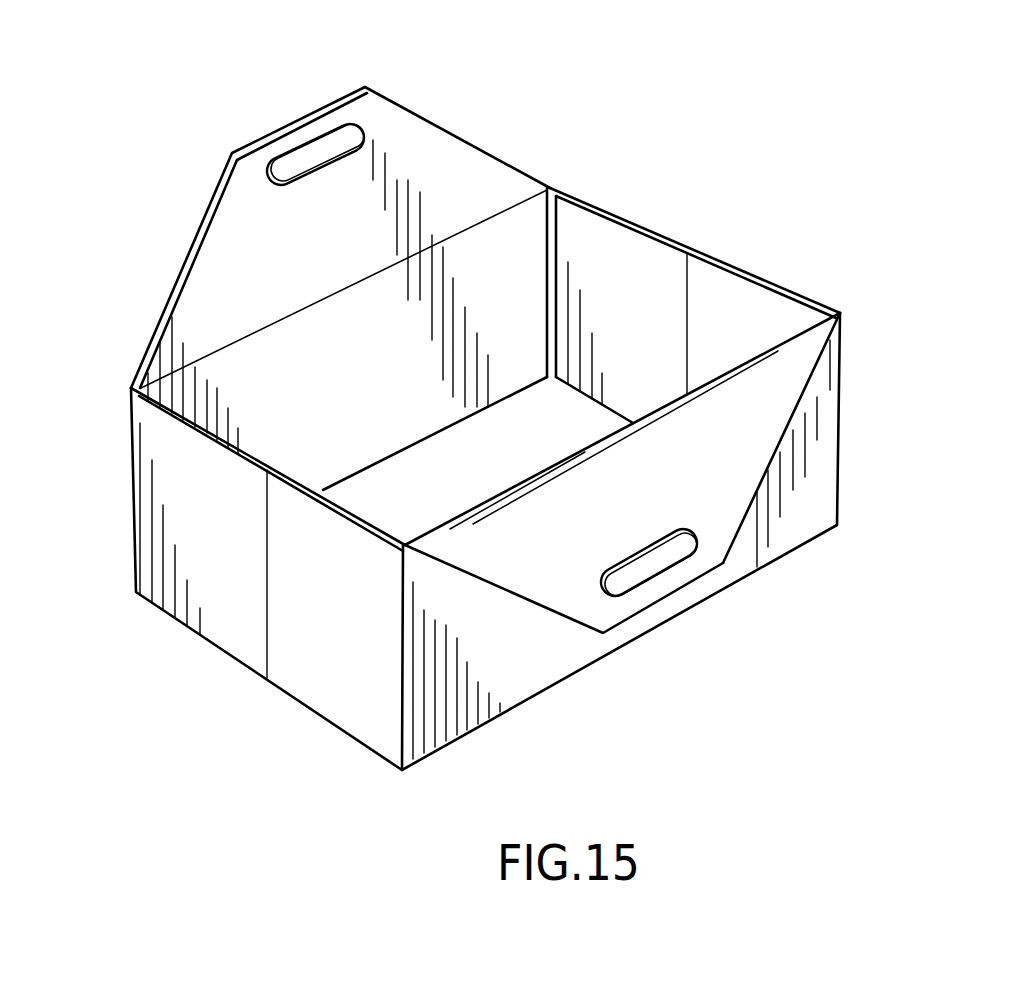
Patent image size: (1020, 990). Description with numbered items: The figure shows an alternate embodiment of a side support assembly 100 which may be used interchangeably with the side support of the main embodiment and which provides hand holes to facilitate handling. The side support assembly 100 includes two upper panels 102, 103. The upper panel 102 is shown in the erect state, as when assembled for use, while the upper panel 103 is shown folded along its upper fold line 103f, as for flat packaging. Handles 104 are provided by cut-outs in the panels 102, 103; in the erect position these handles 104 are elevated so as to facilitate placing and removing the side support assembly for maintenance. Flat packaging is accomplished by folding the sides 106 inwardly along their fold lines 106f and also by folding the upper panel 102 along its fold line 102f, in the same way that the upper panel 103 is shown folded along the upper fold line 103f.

The side support assembly 100 is at (683, 134).
The upper panel 102 is at (172, 302).
The fold line 102f is at (481, 223).
The upper panel 103 is at (543, 612).
The upper fold line 103f is at (753, 350).
The handle 104 is at (265, 177).
The side 106 is at (661, 231).
The fold line 106f is at (687, 303).